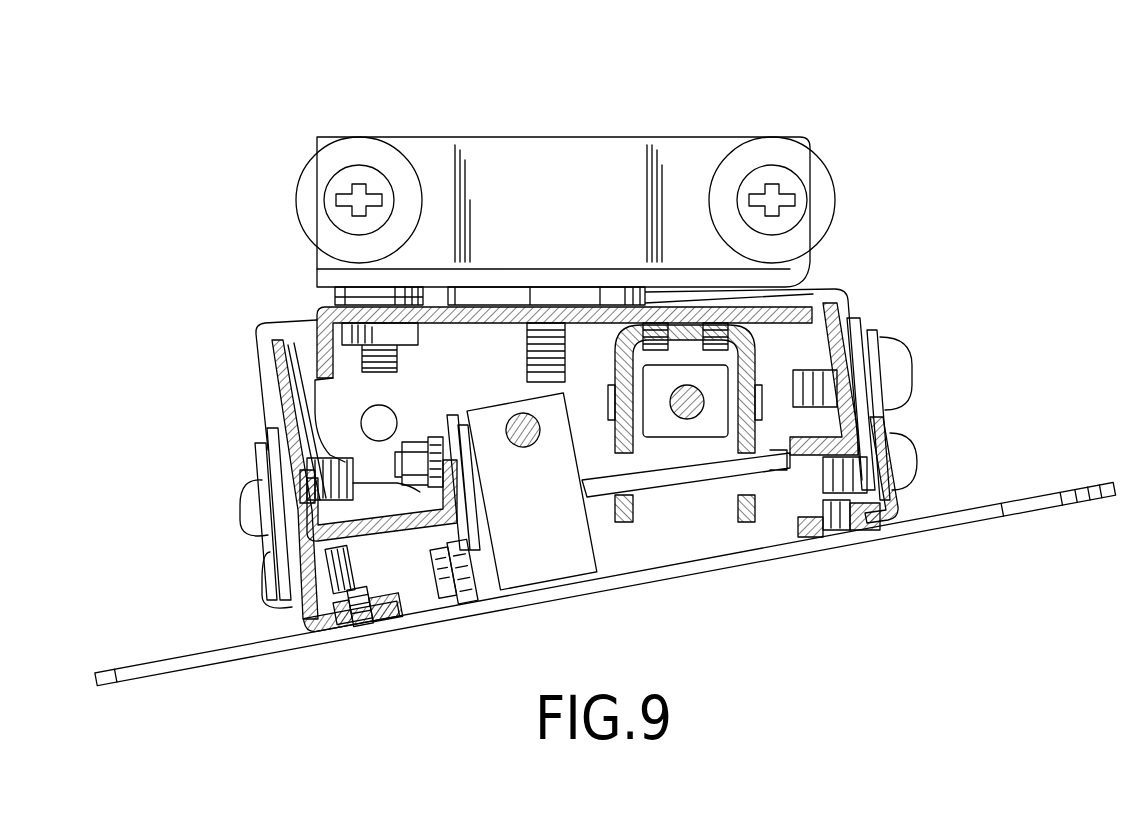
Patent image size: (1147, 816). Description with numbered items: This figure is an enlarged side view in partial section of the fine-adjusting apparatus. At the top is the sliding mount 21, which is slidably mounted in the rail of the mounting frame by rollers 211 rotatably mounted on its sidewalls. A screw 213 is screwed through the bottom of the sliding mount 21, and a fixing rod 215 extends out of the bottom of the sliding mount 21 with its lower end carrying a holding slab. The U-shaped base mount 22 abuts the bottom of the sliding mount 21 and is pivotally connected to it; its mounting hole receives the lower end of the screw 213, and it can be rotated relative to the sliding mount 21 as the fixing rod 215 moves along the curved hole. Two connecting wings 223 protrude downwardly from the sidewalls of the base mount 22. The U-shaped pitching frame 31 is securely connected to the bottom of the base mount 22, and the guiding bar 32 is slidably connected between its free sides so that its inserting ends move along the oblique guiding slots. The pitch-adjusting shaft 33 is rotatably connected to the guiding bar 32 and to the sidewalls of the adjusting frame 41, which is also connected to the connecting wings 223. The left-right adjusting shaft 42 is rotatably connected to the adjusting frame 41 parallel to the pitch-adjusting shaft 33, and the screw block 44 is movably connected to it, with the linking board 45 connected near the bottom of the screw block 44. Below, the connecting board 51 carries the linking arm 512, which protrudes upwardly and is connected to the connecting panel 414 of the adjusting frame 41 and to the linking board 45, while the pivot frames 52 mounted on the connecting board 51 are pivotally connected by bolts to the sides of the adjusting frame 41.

The sliding mount 21 is at (365, 150).
The rollers 211 is at (715, 145).
The screw 213 is at (540, 330).
The fixing rod 215 is at (390, 362).
The base mount 22 is at (320, 308).
The connecting wings 223 is at (322, 408).
The adjusting frame 41 is at (270, 355).
The connecting panel 414 is at (437, 497).
The left-right adjusting shaft 42 is at (521, 438).
The screw block 44 is at (577, 565).
The linking board 45 is at (500, 580).
The pitching frame 31 is at (760, 505).
The guiding bar 32 is at (665, 435).
The pitch-adjusting shaft 33 is at (690, 407).
The connecting board 51 is at (1073, 500).
The linking arm 512 is at (455, 422).
The pivot frames 52 is at (268, 437).